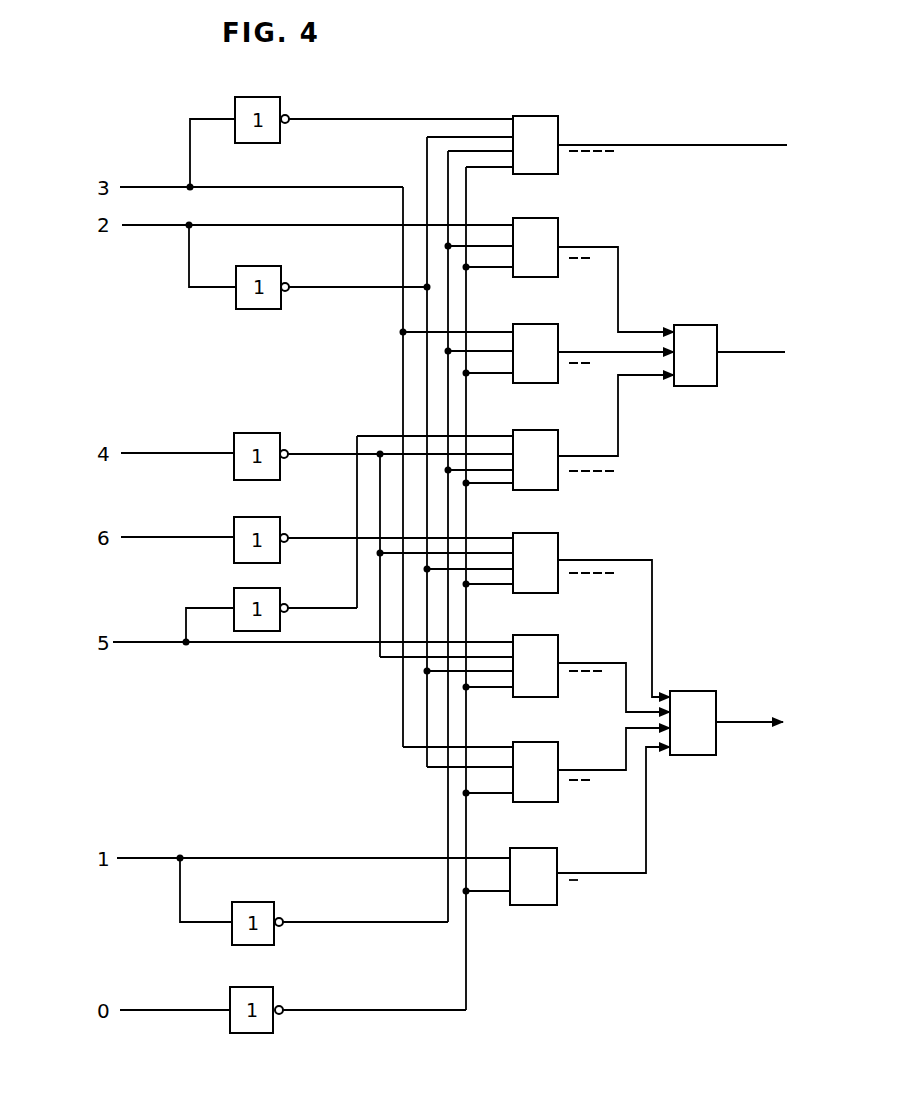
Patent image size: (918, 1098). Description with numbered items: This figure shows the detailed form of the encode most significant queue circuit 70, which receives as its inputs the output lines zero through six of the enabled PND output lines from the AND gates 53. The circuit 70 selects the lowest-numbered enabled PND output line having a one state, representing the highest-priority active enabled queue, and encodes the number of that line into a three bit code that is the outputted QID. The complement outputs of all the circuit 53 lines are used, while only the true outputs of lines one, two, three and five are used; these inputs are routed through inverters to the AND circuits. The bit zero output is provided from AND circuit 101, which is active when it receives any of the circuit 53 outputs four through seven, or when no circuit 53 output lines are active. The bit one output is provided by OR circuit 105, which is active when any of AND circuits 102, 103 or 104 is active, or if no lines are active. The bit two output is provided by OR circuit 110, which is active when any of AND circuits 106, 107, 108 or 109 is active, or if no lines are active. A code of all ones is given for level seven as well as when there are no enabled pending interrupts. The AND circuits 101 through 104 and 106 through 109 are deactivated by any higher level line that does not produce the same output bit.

The AND gates 53 is at (179, 136).
The encode most significant queue circuit 70 is at (798, 71).
The AND circuit 101 is at (565, 131).
The AND circuit 102 is at (593, 262).
The AND circuit 103 is at (593, 341).
The AND circuit 104 is at (593, 433).
The OR circuit 105 is at (694, 340).
The AND circuit 106 is at (591, 602).
The AND circuit 107 is at (591, 660).
The AND circuit 108 is at (591, 759).
The AND circuit 109 is at (590, 826).
The OR circuit 110 is at (693, 709).